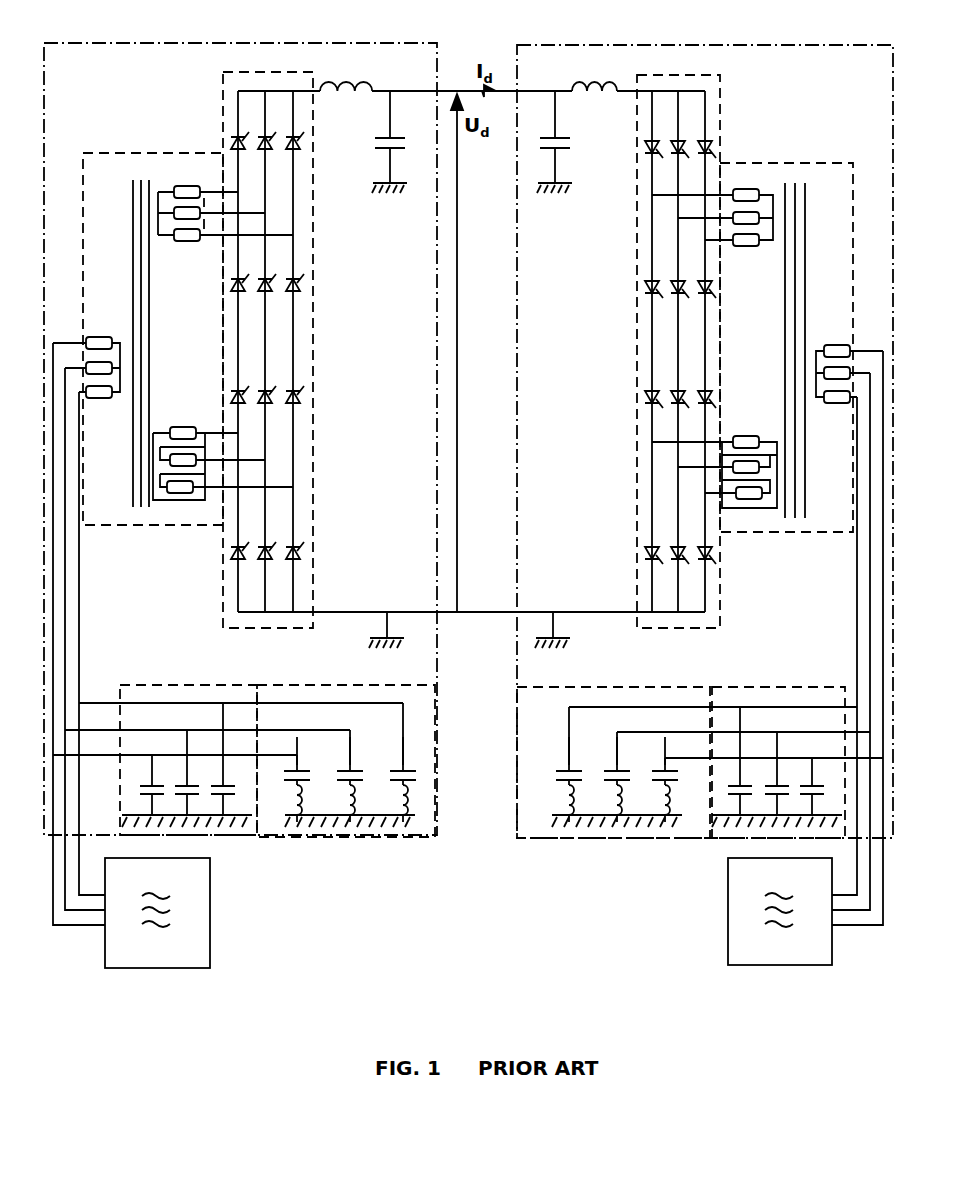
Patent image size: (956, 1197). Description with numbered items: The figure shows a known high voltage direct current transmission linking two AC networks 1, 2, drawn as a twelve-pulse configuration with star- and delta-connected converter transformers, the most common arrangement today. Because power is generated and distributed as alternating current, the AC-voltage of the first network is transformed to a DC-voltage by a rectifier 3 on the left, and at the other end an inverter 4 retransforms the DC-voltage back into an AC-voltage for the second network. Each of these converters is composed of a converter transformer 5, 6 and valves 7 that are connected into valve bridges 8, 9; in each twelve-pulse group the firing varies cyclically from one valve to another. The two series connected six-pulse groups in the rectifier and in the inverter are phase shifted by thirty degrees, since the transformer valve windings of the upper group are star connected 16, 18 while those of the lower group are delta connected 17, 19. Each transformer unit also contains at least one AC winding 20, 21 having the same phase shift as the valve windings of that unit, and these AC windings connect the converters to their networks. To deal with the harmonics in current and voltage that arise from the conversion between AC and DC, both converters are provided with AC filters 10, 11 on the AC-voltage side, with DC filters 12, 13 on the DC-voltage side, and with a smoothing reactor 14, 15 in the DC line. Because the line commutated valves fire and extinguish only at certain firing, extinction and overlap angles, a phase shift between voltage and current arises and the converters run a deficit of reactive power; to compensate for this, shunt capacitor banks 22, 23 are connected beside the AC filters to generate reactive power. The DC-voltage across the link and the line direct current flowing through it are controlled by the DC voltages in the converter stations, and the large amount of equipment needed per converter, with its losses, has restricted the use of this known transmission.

The AC network 1 is at (200, 906).
The AC network 2 is at (732, 906).
The rectifier 3 is at (156, 43).
The inverter 4 is at (816, 48).
The converter transformer 5 is at (105, 155).
The converter transformer 6 is at (808, 165).
The valves 7 is at (246, 138).
The valve bridge 8 is at (312, 369).
The valve bridge 9 is at (634, 300).
The AC filter 10 is at (298, 694).
The AC filter 11 is at (586, 696).
The DC filter 12 is at (377, 148).
The DC filter 13 is at (560, 148).
The smoothing reactor 14 is at (365, 90).
The smoothing reactor 15 is at (573, 90).
The star connected valve winding 16 is at (204, 192).
The delta connected valve winding 17 is at (184, 430).
The star connected valve winding 18 is at (746, 192).
The delta connected valve winding 19 is at (746, 440).
The AC winding 20 is at (116, 342).
The AC winding 21 is at (834, 350).
The shunt capacitor bank 22 is at (148, 695).
The shunt capacitor bank 23 is at (756, 696).